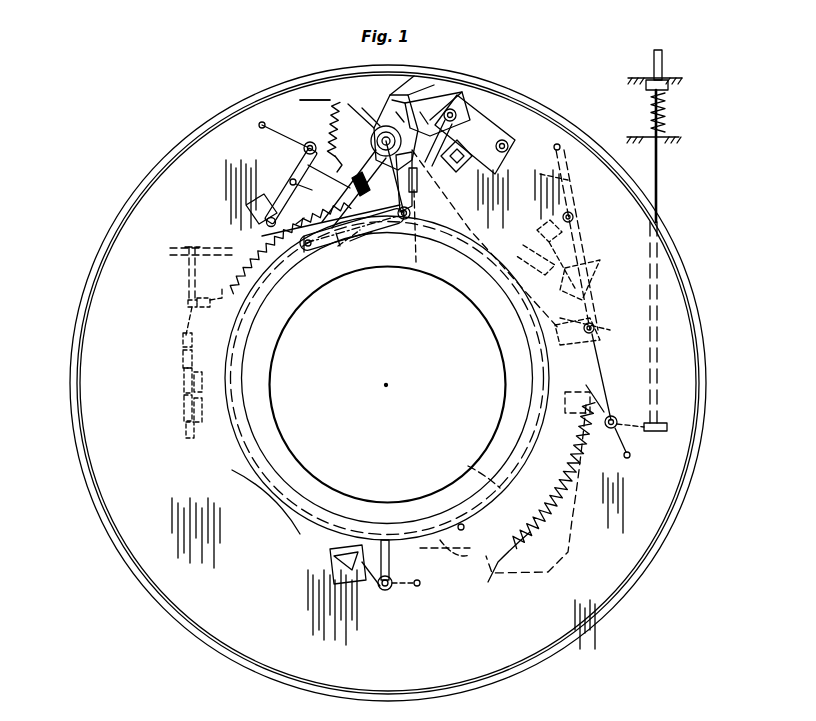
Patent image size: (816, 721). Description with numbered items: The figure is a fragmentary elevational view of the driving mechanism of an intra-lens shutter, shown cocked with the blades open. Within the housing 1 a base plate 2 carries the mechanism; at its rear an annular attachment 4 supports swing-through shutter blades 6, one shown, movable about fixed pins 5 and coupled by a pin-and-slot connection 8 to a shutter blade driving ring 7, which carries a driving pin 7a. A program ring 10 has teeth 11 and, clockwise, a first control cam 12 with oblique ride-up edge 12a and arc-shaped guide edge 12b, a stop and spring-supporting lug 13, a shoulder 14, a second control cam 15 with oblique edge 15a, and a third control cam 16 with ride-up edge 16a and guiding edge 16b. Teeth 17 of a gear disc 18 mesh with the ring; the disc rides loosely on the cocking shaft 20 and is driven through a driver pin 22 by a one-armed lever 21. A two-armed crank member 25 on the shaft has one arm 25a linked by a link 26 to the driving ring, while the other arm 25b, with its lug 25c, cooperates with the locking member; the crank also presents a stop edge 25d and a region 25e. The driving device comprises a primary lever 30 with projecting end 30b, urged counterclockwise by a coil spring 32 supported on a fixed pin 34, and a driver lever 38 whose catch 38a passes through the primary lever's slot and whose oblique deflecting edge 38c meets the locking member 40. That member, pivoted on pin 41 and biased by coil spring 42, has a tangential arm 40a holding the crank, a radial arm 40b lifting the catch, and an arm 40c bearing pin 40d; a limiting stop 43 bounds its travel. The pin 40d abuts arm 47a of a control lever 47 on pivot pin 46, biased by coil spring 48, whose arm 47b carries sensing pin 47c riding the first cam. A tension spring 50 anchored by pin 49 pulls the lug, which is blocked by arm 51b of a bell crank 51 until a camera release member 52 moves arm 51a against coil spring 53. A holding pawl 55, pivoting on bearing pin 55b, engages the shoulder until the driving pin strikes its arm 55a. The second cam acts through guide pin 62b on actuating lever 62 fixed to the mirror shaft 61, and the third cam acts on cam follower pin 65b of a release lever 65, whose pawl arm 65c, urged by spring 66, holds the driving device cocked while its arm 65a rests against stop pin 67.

The housing 1 is at (614, 577).
The base plate 2 is at (229, 626).
The annular attachment 4 is at (262, 366).
The fixed pins 5 is at (511, 428).
The shutter blades 6 is at (490, 466).
The shutter blade driving ring 7 is at (290, 512).
The driving pin 7a is at (459, 524).
The pin-and-slot connection 8 is at (536, 436).
The program ring 10 is at (247, 456).
The teeth 11 is at (319, 226).
The first control cam 12 is at (538, 238).
The ride-up edge 12a is at (598, 318).
The guide edge 12b is at (598, 262).
The stop and spring-supporting lug 13 is at (343, 227).
The shoulder 14 is at (466, 558).
The second control cam 15 is at (186, 432).
The oblique edge 15a is at (184, 352).
The third control cam 16 is at (190, 314).
The ride-up edge 16a is at (218, 282).
The guiding edge 16b is at (183, 334).
The teeth 17 is at (332, 104).
The gear disc 18 is at (330, 128).
The cocking shaft 20 is at (371, 140).
The one-armed lever 21 is at (424, 112).
The driver pin 22 is at (398, 112).
The crank member 25 is at (412, 130).
The crank arm 25a is at (416, 262).
The crank arm 25b is at (348, 104).
The tab or lug 25c is at (362, 108).
The stop edge 25d is at (418, 252).
The lever stop 25e is at (418, 190).
The link 26 is at (338, 250).
The primary lever 30 is at (368, 150).
The projecting end 30b is at (290, 241).
The coil spring 32 is at (296, 100).
The fixed pin 34 is at (306, 100).
The driver lever 38 is at (354, 196).
The catch 38a is at (308, 252).
The oblique deflecting edge 38c is at (340, 248).
The locking member 40 is at (440, 112).
The tangential arm 40a is at (392, 100).
The radial arm 40b is at (428, 170).
The arm 40c is at (485, 130).
The pin 40d is at (508, 143).
The pin 41 is at (452, 108).
The coil spring 42 is at (462, 102).
The limiting stop 43 is at (474, 184).
The pivot pin 46 is at (574, 217).
The control lever 47 is at (572, 240).
The control lever arm 47a is at (570, 182).
The control lever arm 47b is at (606, 324).
The sensing pin 47c is at (590, 336).
The coil spring 48 is at (560, 160).
The pin 49 is at (494, 572).
The tension spring 50 is at (540, 524).
The bell crank 51 is at (608, 430).
The bell crank arm 51a is at (655, 431).
The bell crank arm 51b is at (612, 416).
The camera release member 52 is at (660, 168).
The coil spring 53 is at (630, 458).
The holding pawl 55 is at (385, 592).
The pawl arm 55a is at (383, 540).
The bearing pin 55b is at (395, 588).
The shaft 61 is at (178, 248).
The actuating lever 62 is at (188, 272).
The guide pin 62b is at (188, 302).
The release lever 65 is at (304, 148).
The release lever arm 65a is at (270, 200).
The cam follower pin 65b is at (258, 222).
The pawl arm 65c is at (307, 181).
The spring 66 is at (262, 127).
The stop pin 67 is at (309, 213).